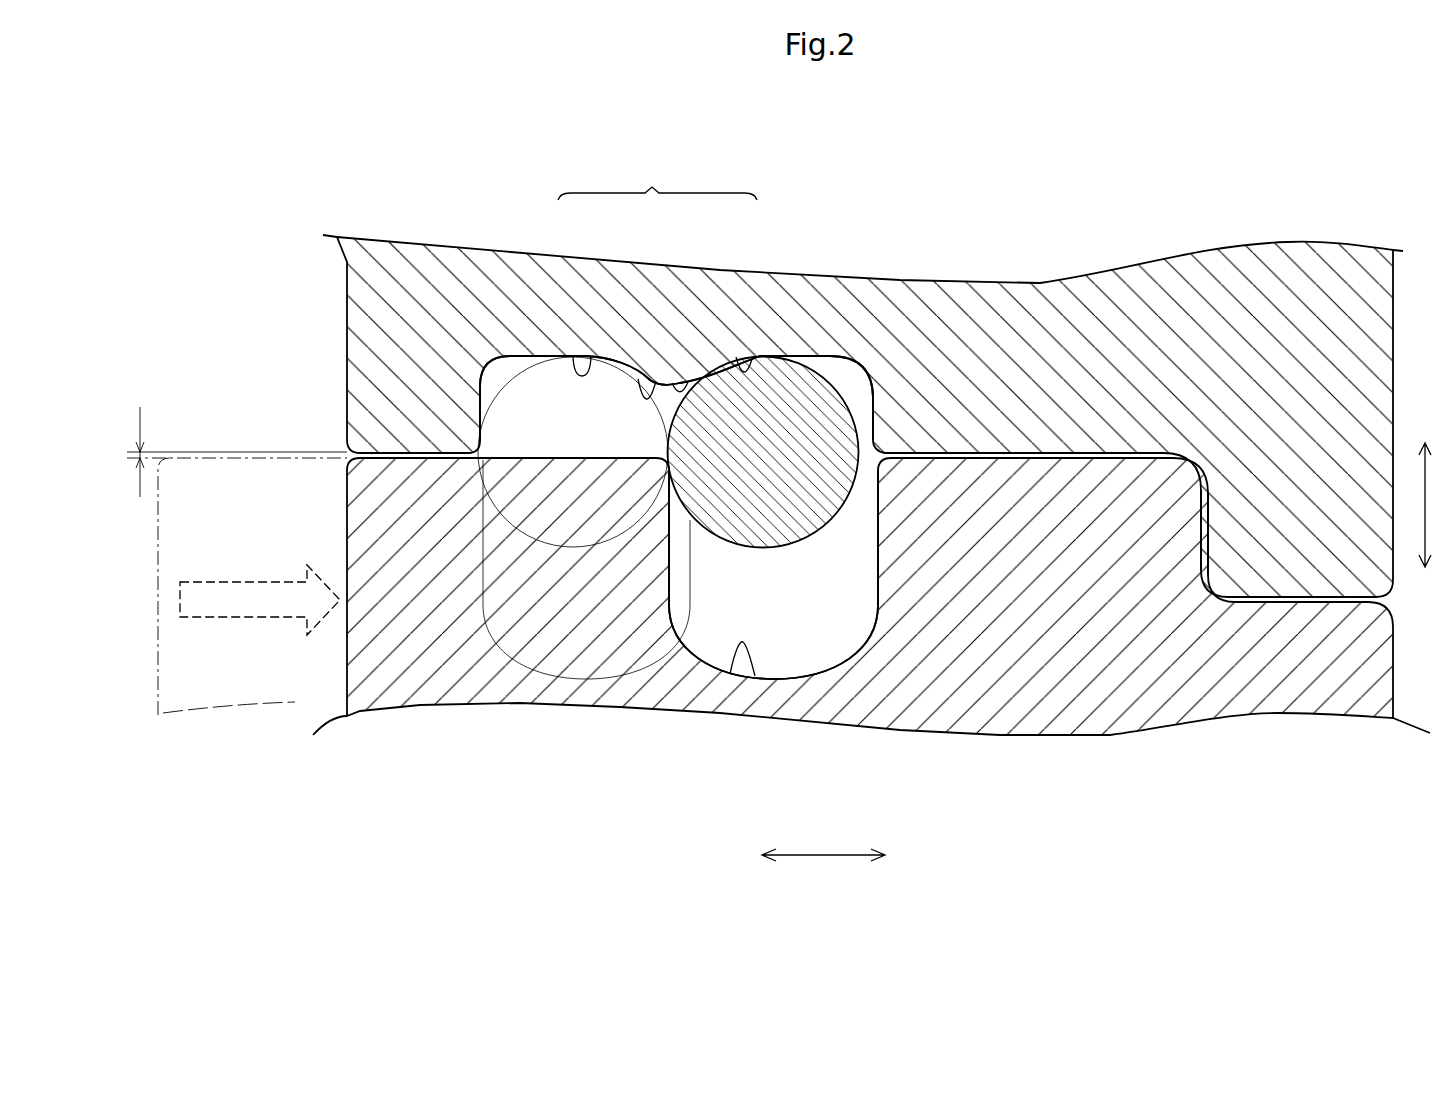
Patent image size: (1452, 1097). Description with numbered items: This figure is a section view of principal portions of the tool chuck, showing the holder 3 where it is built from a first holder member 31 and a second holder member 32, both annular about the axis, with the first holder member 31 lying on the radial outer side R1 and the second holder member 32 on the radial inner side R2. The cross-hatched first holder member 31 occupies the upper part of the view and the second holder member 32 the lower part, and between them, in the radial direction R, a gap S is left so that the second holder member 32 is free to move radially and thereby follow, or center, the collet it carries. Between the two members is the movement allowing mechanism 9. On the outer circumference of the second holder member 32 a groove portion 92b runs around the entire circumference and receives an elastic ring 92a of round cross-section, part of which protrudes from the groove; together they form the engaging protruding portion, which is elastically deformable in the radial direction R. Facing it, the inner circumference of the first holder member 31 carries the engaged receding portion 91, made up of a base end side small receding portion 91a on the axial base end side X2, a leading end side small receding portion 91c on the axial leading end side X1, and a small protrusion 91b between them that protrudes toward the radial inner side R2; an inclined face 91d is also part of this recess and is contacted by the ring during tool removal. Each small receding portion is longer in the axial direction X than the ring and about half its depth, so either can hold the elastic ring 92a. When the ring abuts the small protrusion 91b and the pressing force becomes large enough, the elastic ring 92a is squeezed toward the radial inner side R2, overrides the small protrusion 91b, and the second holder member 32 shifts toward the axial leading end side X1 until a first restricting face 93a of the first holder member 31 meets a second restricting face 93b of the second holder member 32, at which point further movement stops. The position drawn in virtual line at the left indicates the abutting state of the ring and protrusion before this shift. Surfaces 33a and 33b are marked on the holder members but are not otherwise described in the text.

The holder 3 is at (871, 521).
The first holder member 31 is at (1068, 282).
The second holder member 32 is at (1110, 740).
The movement allowing mechanism 9 is at (524, 280).
The engaged receding portion 91 is at (657, 180).
The base end side small receding portion 91a is at (577, 356).
The small protrusion 91b is at (639, 378).
The leading end side small receding portion 91c is at (740, 358).
The inclined face 91d is at (684, 383).
The elastic ring 92a is at (795, 372).
The groove portion 92b is at (734, 655).
The upper parting surface 33a is at (347, 346).
The lower parting surface 33b is at (347, 525).
The first restricting face 93a is at (1201, 533).
The second restricting face 93b is at (1208, 533).
The gap S is at (142, 452).
The radial direction R is at (1416, 505).
The radial outer side R1 is at (1424, 425).
The radial inner side R2 is at (1424, 585).
The axial direction X is at (823, 843).
The axial leading end side X1 is at (906, 856).
The axial base end side X2 is at (739, 856).